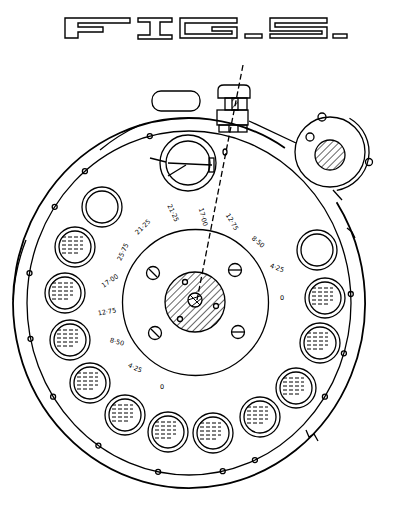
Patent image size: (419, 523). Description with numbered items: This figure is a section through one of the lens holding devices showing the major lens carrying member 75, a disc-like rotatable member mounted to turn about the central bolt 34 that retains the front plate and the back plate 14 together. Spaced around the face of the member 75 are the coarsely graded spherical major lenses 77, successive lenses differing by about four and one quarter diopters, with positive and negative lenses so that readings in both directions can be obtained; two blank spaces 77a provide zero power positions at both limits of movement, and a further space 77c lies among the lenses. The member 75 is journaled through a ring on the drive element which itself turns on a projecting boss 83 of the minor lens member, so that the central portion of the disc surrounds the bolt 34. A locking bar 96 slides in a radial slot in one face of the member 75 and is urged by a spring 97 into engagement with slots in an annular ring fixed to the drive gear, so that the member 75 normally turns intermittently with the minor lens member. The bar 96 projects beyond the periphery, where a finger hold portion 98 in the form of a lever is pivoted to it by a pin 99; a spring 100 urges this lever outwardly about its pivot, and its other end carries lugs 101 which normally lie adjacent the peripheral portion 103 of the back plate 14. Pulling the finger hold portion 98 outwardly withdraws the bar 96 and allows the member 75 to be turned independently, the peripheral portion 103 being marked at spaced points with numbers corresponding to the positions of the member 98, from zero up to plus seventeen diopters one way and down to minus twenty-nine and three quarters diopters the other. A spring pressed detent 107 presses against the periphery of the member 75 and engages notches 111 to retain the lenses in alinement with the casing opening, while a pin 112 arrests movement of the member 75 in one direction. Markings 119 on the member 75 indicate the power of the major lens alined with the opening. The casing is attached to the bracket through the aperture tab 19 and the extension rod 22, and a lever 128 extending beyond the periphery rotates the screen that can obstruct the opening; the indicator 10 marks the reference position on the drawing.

The pointer / indicator line 10 is at (260, 53).
The back plate 14 is at (120, 472).
The aperture tab 19 is at (338, 197).
The extension rod 22 is at (342, 163).
The bolt 34 is at (193, 302).
The major lens carrying member 75 is at (52, 380).
The major lenses 77 is at (262, 410).
The blank spaces 77a is at (102, 203).
The aperture (empty) 77c is at (320, 250).
The projecting boss 83 is at (188, 328).
The locking bar 96 is at (236, 134).
The spring 97 is at (166, 170).
The finger hold portion 98 is at (250, 91).
The pin 99 is at (250, 107).
The spring 100 is at (345, 134).
The lugs 101 is at (226, 99).
The peripheral portion 103 is at (122, 132).
The spring pressed detent 107 is at (313, 183).
The notches 111 is at (352, 232).
The pin 112 is at (318, 438).
The markings 119 is at (257, 233).
The lever 128 is at (153, 103).